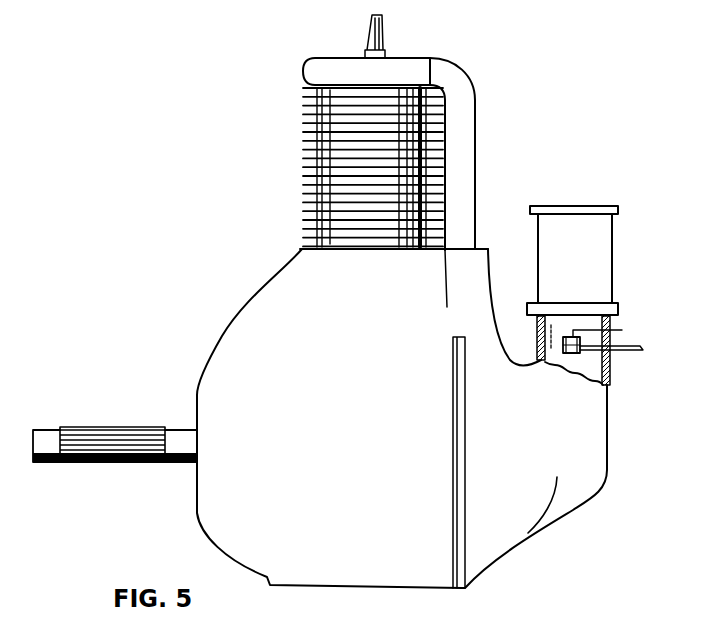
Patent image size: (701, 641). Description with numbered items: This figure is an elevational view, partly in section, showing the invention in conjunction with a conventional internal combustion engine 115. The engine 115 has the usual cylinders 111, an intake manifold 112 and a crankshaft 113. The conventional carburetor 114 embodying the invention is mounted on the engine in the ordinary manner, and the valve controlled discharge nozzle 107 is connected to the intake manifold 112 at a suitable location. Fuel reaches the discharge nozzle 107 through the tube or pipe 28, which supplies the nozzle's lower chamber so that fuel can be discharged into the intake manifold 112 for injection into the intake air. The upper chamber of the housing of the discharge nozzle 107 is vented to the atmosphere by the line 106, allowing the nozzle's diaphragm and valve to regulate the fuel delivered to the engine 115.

The tube or pipe 28 is at (622, 364).
The line 106 is at (606, 331).
The valve controlled discharge nozzle 107 is at (570, 352).
The cylinders 111 is at (312, 147).
The intake manifold 112 is at (473, 158).
The crankshaft 113 is at (57, 429).
The carburetor 114 is at (600, 272).
The internal combustion engine 115 is at (252, 330).